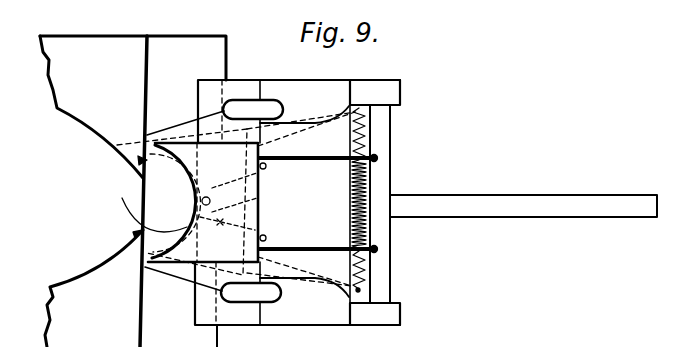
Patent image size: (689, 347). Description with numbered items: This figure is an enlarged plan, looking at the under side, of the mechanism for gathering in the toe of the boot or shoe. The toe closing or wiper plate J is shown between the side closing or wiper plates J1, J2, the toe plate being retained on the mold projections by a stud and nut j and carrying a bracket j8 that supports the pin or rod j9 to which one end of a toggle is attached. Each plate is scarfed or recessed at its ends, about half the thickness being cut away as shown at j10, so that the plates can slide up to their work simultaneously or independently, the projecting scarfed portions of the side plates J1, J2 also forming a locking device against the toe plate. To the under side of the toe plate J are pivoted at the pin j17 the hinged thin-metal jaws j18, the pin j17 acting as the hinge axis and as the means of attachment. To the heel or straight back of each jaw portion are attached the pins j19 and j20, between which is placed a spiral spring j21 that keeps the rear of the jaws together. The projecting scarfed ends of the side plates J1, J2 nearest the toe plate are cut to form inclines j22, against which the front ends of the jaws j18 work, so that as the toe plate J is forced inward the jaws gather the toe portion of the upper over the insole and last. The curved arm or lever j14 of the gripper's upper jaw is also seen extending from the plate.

The side closing or wiper plate J2 is at (91, 107).
The side closing or wiper plate J1 is at (94, 288).
The toe closing or wiper plate J is at (272, 78).
The stud and nut j is at (268, 110).
The bracket j8 is at (369, 342).
The pin or rod j9 is at (392, 145).
The scarfed or recessed end j10 is at (147, 100).
The curved arm or lever j14 is at (532, 200).
The pin j17 is at (204, 198).
The hinged thin-metal jaws j18 is at (180, 160).
The pin j19 is at (307, 239).
The pin j20 is at (309, 160).
The spiral spring j21 is at (362, 199).
The incline j22 is at (140, 232).